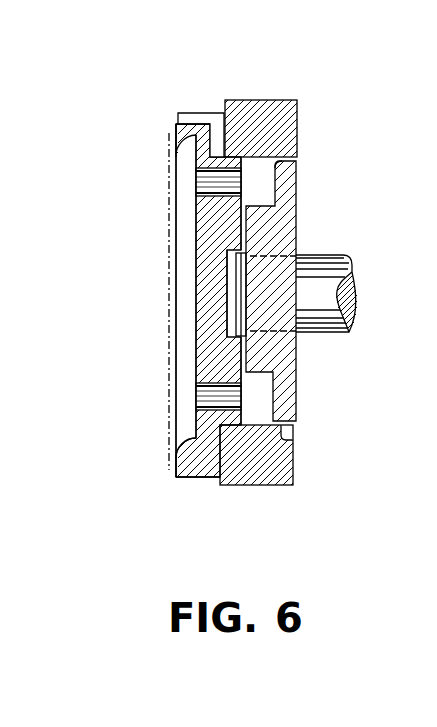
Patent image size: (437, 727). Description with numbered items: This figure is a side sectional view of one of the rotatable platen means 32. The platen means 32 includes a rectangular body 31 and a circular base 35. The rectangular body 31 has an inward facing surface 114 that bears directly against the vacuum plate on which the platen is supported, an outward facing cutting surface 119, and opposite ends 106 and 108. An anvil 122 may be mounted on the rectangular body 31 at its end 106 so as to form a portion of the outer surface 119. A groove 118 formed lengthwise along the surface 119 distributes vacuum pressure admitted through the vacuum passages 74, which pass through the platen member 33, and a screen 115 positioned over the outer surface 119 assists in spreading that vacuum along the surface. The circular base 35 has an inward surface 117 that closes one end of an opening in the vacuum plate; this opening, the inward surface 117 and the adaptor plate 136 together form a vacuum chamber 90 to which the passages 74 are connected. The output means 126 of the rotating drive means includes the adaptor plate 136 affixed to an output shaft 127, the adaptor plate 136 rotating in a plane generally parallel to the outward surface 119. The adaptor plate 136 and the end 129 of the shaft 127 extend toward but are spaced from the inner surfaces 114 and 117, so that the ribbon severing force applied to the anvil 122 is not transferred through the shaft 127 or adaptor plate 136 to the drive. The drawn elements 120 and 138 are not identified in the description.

The rectangular body 31 is at (175, 243).
The platen means 32 is at (143, 217).
The platen member 33 is at (197, 343).
The circular base 35 is at (238, 418).
The vacuum passages 74 is at (213, 183).
The vacuum chamber 90 is at (255, 167).
The end of rectangular body 106 is at (183, 153).
The end of rectangular body 108 is at (200, 480).
The inward facing surface 114 is at (243, 120).
The screen 115 is at (167, 438).
The inward surface 117 is at (250, 344).
The groove 118 is at (197, 315).
The outward facing cutting surface 119 is at (177, 128).
The outer surface 120 is at (167, 355).
The anvil 122 is at (205, 113).
The output means 126 is at (341, 252).
The output shaft 127 is at (336, 288).
The end of shaft 129 is at (237, 270).
The adaptor plate 136 is at (296, 227).
The O-ring seal 138 is at (293, 150).